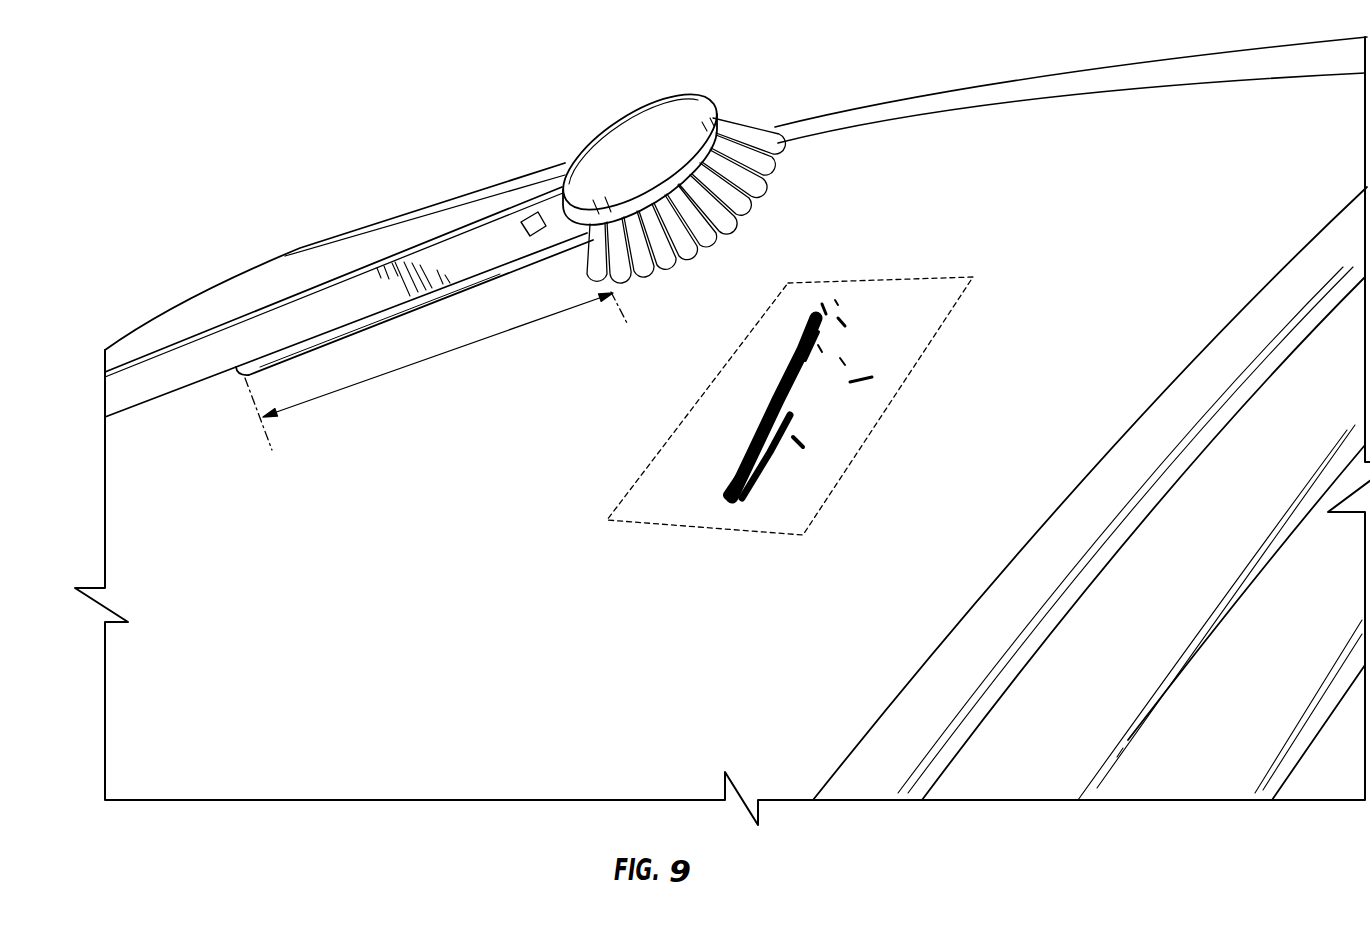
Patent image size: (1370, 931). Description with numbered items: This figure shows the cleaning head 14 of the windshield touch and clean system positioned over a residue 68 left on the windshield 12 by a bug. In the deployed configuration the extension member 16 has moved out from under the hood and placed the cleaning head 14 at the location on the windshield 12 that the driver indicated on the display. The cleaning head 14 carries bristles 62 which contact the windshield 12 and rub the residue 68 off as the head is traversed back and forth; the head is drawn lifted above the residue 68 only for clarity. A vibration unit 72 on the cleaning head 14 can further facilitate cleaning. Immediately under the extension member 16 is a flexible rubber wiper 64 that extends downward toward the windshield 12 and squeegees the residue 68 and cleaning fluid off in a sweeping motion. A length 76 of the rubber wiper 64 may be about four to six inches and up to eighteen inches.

The windshield 12 is at (438, 621).
The cleaning head 14 is at (635, 138).
The extension member 16 is at (332, 304).
The bristles 62 is at (720, 203).
The rubber wiper 64 is at (490, 278).
The residue 68 is at (933, 345).
The vibration unit 72 is at (533, 222).
The length 76 is at (509, 334).